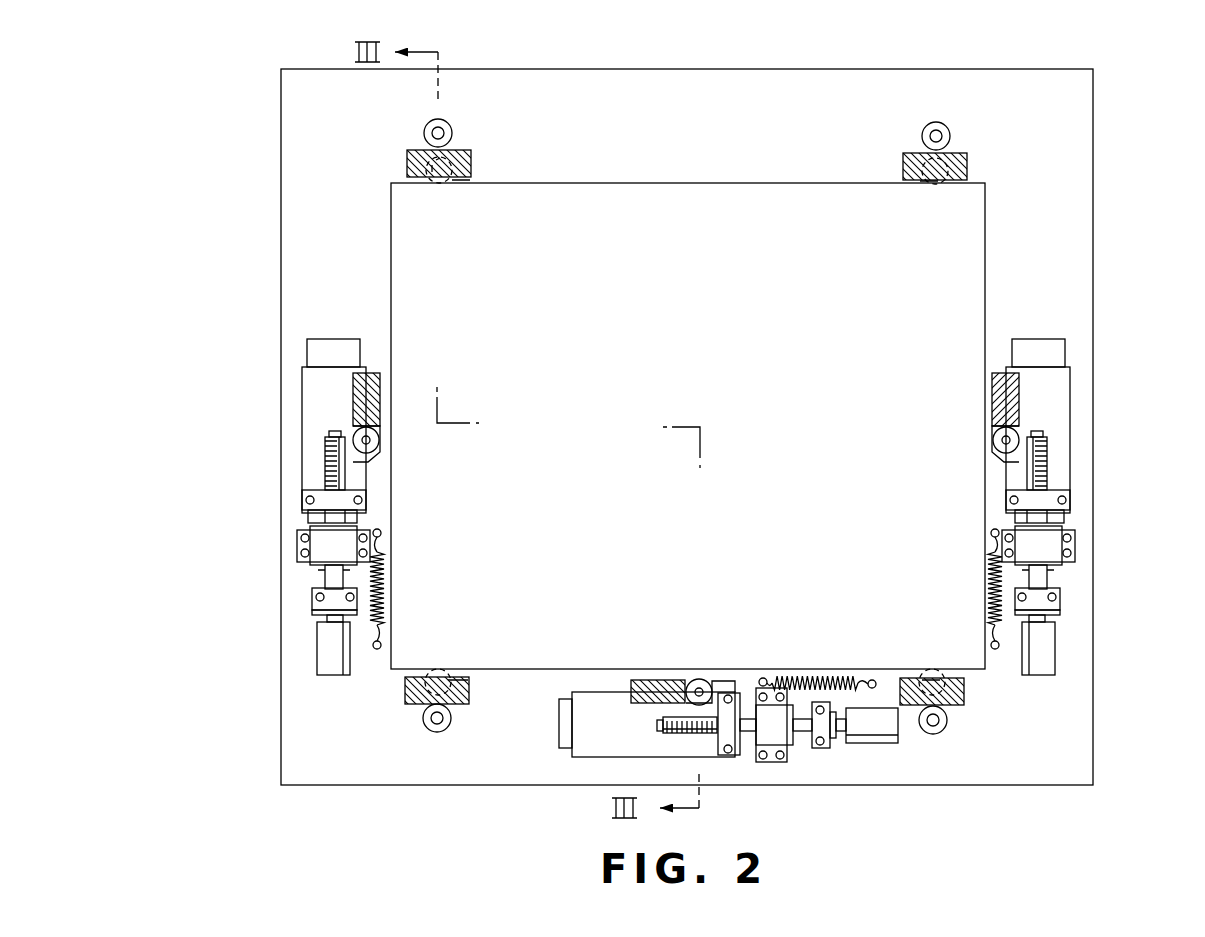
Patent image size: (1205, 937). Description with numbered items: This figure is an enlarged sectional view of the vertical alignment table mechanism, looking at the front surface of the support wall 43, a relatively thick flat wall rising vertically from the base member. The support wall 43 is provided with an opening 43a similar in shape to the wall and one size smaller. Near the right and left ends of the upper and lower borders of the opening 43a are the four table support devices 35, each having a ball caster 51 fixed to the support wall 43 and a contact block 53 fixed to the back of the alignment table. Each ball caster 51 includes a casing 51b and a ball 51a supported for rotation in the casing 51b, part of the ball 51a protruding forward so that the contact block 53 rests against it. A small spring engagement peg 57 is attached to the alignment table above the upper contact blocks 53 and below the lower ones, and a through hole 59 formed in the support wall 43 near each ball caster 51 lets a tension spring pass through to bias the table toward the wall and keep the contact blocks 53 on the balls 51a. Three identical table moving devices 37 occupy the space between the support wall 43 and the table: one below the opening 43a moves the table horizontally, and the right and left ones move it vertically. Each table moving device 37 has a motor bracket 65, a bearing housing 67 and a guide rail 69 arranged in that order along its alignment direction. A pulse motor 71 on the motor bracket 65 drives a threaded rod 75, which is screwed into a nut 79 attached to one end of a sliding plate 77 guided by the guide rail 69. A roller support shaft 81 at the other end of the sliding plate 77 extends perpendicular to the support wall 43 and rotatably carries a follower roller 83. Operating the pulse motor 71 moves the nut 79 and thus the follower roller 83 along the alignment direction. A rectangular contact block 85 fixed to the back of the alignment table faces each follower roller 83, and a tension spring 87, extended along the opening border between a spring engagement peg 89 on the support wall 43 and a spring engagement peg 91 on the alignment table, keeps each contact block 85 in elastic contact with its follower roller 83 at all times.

The table support device 35 is at (395, 172).
The table moving device 37 is at (300, 524).
The support wall 43 is at (1080, 232).
The opening 43a is at (985, 278).
The ball caster 51 is at (455, 182).
The ball 51a is at (436, 182).
The casing 51b is at (470, 180).
The contact block 53 is at (410, 152).
The spring engagement peg 57 is at (432, 124).
The through hole 59 is at (445, 128).
The motor bracket 65 is at (320, 600).
The bearing housing 67 is at (320, 545).
The guide rail 69 is at (335, 358).
The pulse motor 71 is at (335, 654).
The threaded rod 75 is at (330, 455).
The sliding plate 77 is at (330, 415).
The nut 79 is at (325, 502).
The roller support shaft 81 is at (380, 441).
The follower roller 83 is at (372, 452).
The contact block 85 is at (375, 385).
The tension spring 87 is at (384, 580).
The spring engagement peg 89 is at (377, 650).
The spring engagement peg 91 is at (381, 533).